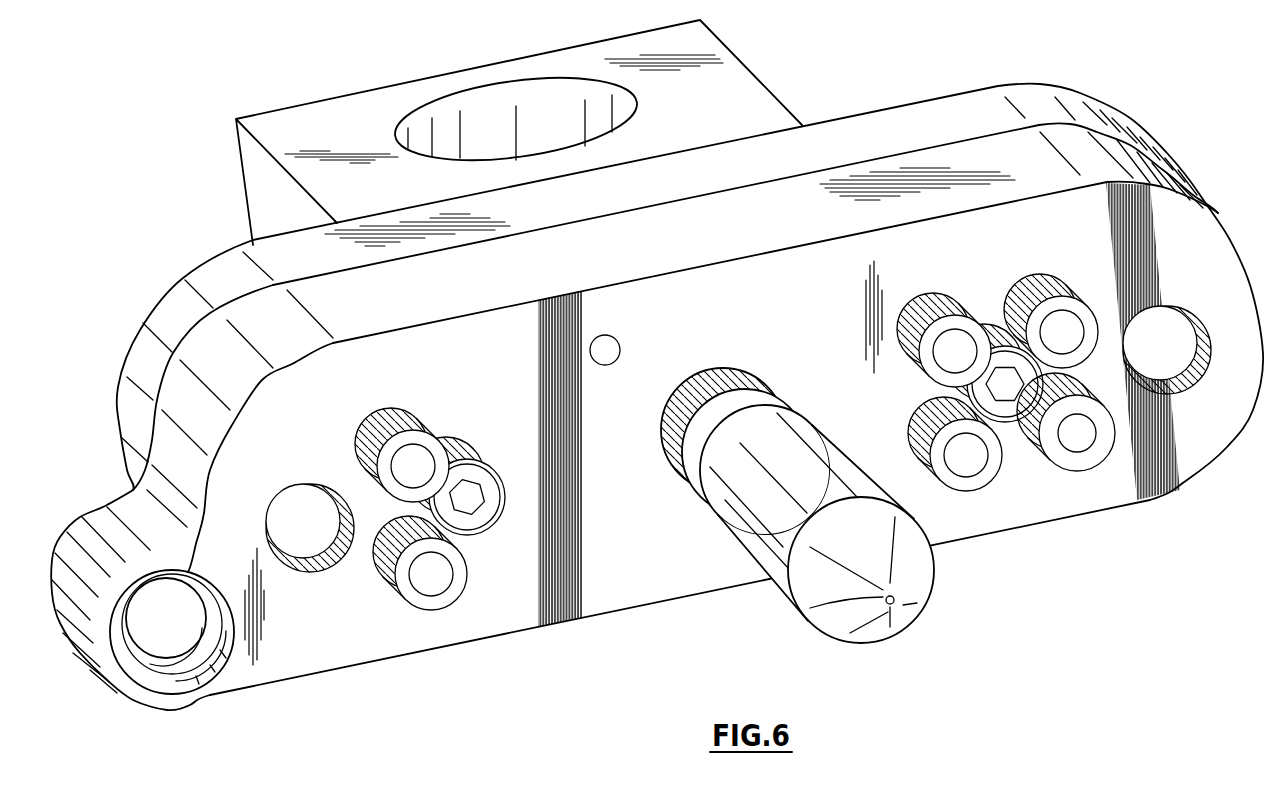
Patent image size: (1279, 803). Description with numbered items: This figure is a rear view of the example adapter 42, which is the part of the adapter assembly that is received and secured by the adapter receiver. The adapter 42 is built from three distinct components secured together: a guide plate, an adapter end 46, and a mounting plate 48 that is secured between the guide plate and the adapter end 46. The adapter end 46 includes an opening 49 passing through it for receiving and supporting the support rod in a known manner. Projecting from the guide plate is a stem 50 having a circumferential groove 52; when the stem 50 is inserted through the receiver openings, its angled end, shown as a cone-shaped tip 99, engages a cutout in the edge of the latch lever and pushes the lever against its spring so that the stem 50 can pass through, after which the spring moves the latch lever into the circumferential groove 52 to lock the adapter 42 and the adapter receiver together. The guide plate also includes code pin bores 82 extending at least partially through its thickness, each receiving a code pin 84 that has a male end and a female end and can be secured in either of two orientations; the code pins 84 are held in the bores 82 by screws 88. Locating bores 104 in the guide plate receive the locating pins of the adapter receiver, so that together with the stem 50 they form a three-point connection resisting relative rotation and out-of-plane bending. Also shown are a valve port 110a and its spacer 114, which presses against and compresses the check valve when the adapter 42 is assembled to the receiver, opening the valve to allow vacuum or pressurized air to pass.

The adapter 42 is at (657, 365).
The adapter end 46 is at (524, 130).
The mounting plate 48 is at (175, 300).
The opening 49 is at (497, 92).
The stem 50 is at (885, 635).
The circumferential groove 52 is at (798, 511).
The code pin bores 82 is at (1006, 396).
The code pins 84 is at (1078, 452).
The screws 88 is at (493, 508).
The cone-shaped tip 99 is at (800, 577).
The locating bores 104 is at (1172, 313).
The valve port 110a is at (163, 638).
The spacer 114 is at (203, 650).